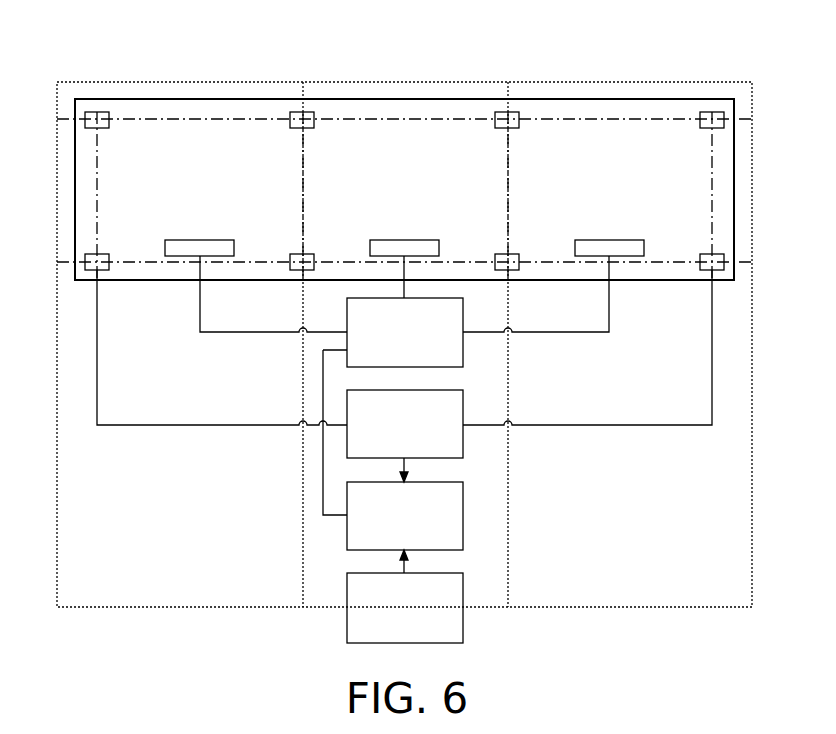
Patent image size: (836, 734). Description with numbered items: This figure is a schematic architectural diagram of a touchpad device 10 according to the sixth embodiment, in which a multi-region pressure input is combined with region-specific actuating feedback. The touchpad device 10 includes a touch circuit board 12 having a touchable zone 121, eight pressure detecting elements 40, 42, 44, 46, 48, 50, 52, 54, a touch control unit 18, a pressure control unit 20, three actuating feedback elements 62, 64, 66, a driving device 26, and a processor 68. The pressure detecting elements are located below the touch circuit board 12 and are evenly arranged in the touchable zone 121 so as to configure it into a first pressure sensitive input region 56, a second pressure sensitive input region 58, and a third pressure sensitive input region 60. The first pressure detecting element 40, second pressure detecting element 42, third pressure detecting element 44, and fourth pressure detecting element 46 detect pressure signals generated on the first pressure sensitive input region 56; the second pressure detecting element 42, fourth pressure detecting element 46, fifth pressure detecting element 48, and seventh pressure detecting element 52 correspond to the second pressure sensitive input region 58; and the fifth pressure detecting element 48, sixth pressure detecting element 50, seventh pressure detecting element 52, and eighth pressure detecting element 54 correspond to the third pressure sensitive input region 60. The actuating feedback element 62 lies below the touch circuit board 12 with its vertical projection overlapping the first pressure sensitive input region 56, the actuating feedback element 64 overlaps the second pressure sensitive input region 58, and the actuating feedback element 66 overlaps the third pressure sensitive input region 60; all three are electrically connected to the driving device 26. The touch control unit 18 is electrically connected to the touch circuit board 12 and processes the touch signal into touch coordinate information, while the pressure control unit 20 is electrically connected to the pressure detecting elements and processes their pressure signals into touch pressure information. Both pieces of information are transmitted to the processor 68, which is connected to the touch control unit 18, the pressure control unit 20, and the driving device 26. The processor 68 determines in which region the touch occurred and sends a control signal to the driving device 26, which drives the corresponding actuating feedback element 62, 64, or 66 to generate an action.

The touchpad device 10 is at (50, 70).
The touch circuit board 12 is at (619, 99).
The touchable zone 121 is at (668, 108).
The touch control unit 18 is at (463, 446).
The pressure control unit 20 is at (463, 630).
The driving device 26 is at (463, 353).
The first pressure detecting element 40 is at (95, 112).
The second pressure detecting element 42 is at (311, 112).
The third pressure detecting element 44 is at (105, 270).
The fourth pressure detecting element 46 is at (292, 270).
The fifth pressure detecting element 48 is at (497, 112).
The sixth pressure detecting element 50 is at (717, 118).
The seventh pressure detecting element 52 is at (518, 270).
The eighth pressure detecting element 54 is at (702, 270).
The first pressure sensitive input region 56 is at (255, 145).
The second pressure sensitive input region 58 is at (369, 145).
The third pressure sensitive input region 60 is at (548, 145).
The actuating feedback element 62 is at (185, 248).
The actuating feedback element 64 is at (414, 248).
The actuating feedback element 66 is at (587, 248).
The processor 68 is at (463, 518).